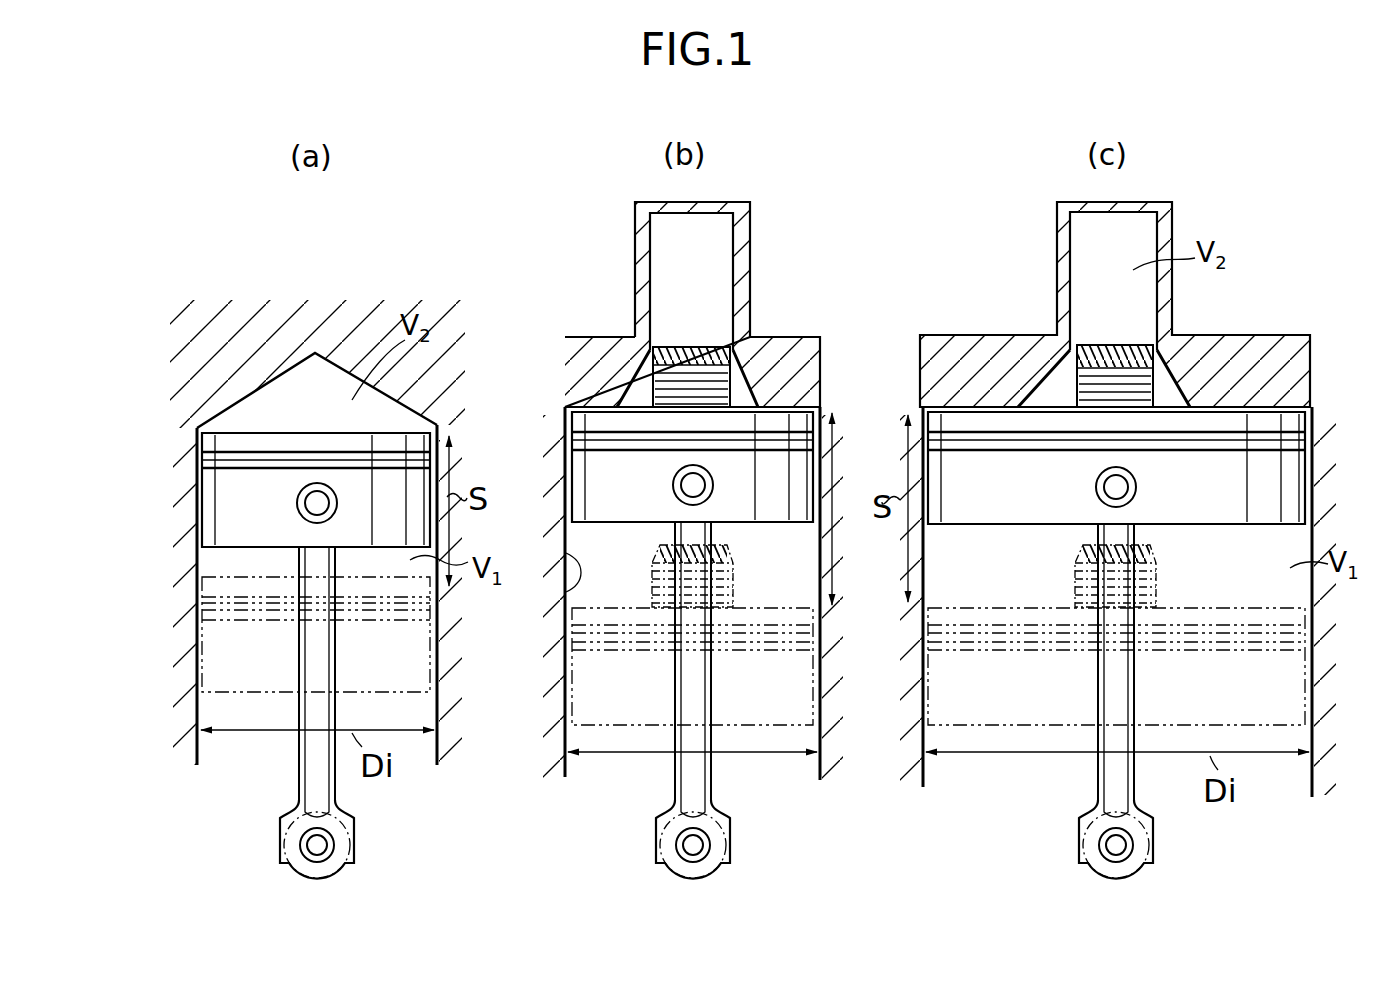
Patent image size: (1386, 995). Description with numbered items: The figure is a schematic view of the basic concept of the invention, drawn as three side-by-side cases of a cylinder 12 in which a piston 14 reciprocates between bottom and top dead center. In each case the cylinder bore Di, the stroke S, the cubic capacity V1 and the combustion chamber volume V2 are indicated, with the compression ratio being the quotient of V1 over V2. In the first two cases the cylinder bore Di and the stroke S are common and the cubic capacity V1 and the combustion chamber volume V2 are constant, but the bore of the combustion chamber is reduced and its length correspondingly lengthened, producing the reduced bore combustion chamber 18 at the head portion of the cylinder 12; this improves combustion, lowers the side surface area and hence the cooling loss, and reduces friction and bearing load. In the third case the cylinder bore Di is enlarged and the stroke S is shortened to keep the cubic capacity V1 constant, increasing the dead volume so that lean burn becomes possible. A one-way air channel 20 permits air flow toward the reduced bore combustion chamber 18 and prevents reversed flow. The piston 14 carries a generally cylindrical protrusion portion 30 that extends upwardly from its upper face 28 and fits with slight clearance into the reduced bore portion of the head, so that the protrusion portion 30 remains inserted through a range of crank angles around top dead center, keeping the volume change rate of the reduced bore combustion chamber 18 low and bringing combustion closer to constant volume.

The cylinder 12 is at (566, 563).
The piston 14 is at (598, 478).
The reduced bore combustion chamber 18 is at (673, 248).
The one-way air channel 20 is at (748, 340).
The upper face of the piston 28 is at (613, 405).
The protrusion portion 30 is at (736, 400).
The stroke S is at (824, 478).
The cylinder bore Di is at (752, 756).
The cubic capacity V1 is at (800, 572).
The combustion chamber volume V2 is at (700, 330).